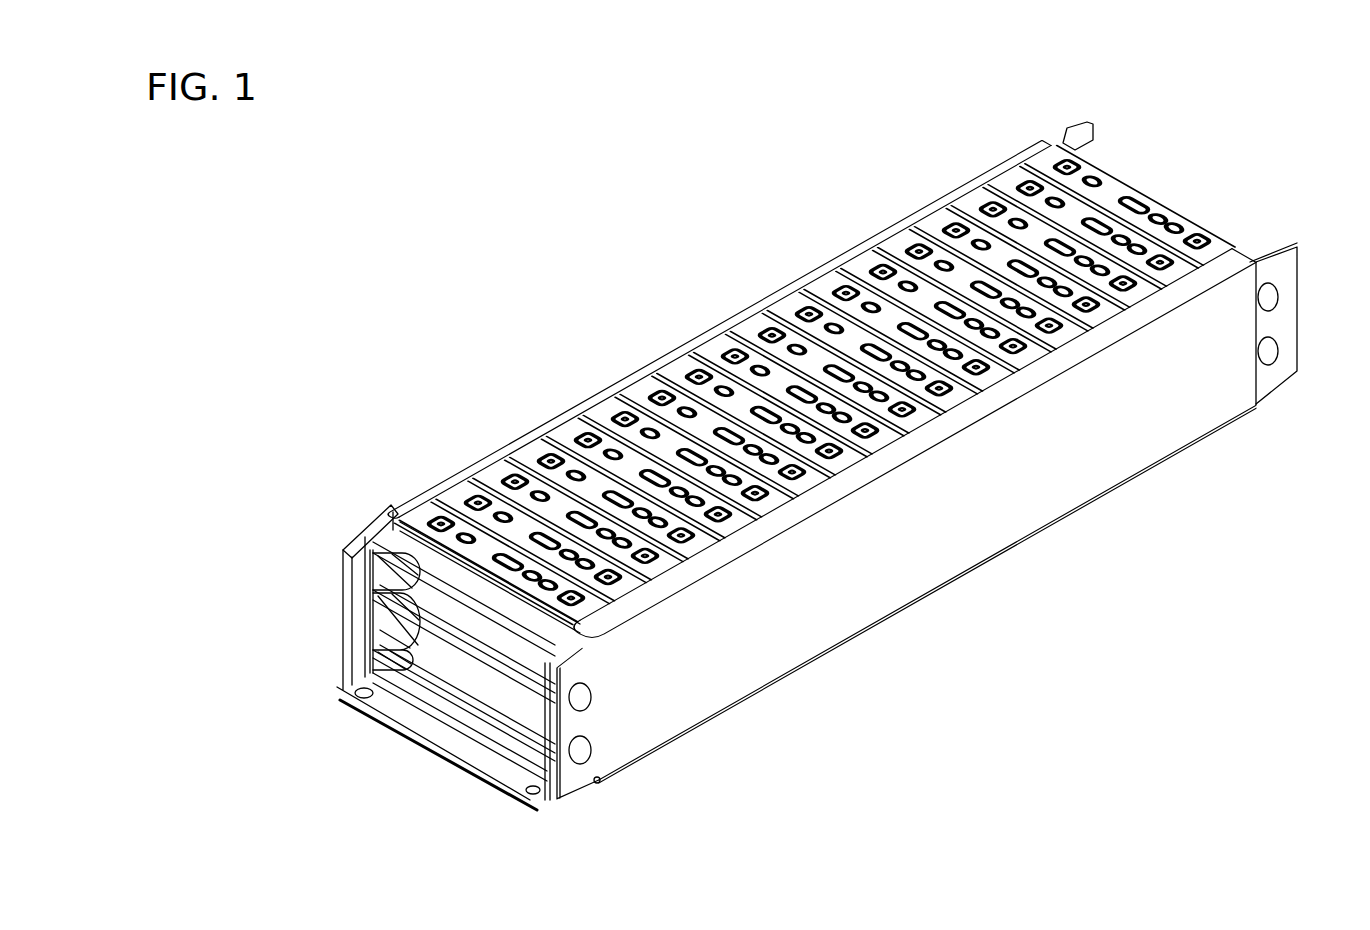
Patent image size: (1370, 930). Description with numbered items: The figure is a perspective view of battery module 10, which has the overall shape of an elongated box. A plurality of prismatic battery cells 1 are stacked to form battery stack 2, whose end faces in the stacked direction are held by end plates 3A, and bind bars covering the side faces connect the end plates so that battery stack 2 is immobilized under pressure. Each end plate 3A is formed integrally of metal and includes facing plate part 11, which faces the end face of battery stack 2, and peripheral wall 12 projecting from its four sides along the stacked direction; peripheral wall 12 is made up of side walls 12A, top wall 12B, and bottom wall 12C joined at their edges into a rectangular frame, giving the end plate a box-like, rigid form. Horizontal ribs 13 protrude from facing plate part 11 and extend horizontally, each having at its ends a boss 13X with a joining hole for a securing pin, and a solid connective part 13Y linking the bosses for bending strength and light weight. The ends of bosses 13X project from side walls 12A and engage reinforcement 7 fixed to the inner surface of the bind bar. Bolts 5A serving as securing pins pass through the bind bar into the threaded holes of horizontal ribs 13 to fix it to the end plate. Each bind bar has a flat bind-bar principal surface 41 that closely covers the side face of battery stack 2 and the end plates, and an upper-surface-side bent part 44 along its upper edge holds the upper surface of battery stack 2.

The battery module 10 is at (383, 250).
The prismatic battery cell 1 is at (1042, 228).
The battery stack 2 is at (786, 105).
The end plate 3A is at (1163, 195).
The upper-surface-side bent part 44 is at (593, 397).
The bind-bar principal surface 41 is at (990, 518).
The bolt 5A is at (1275, 352).
The horizontal rib 13 is at (272, 397).
The boss 13X is at (372, 537).
The connective part 13Y is at (423, 603).
The peripheral wall 12 is at (213, 562).
The side wall 12A is at (380, 610).
The top wall 12B is at (380, 667).
The bottom wall 12C is at (375, 740).
The reinforcement 7 is at (358, 578).
The facing plate part 11 is at (431, 695).